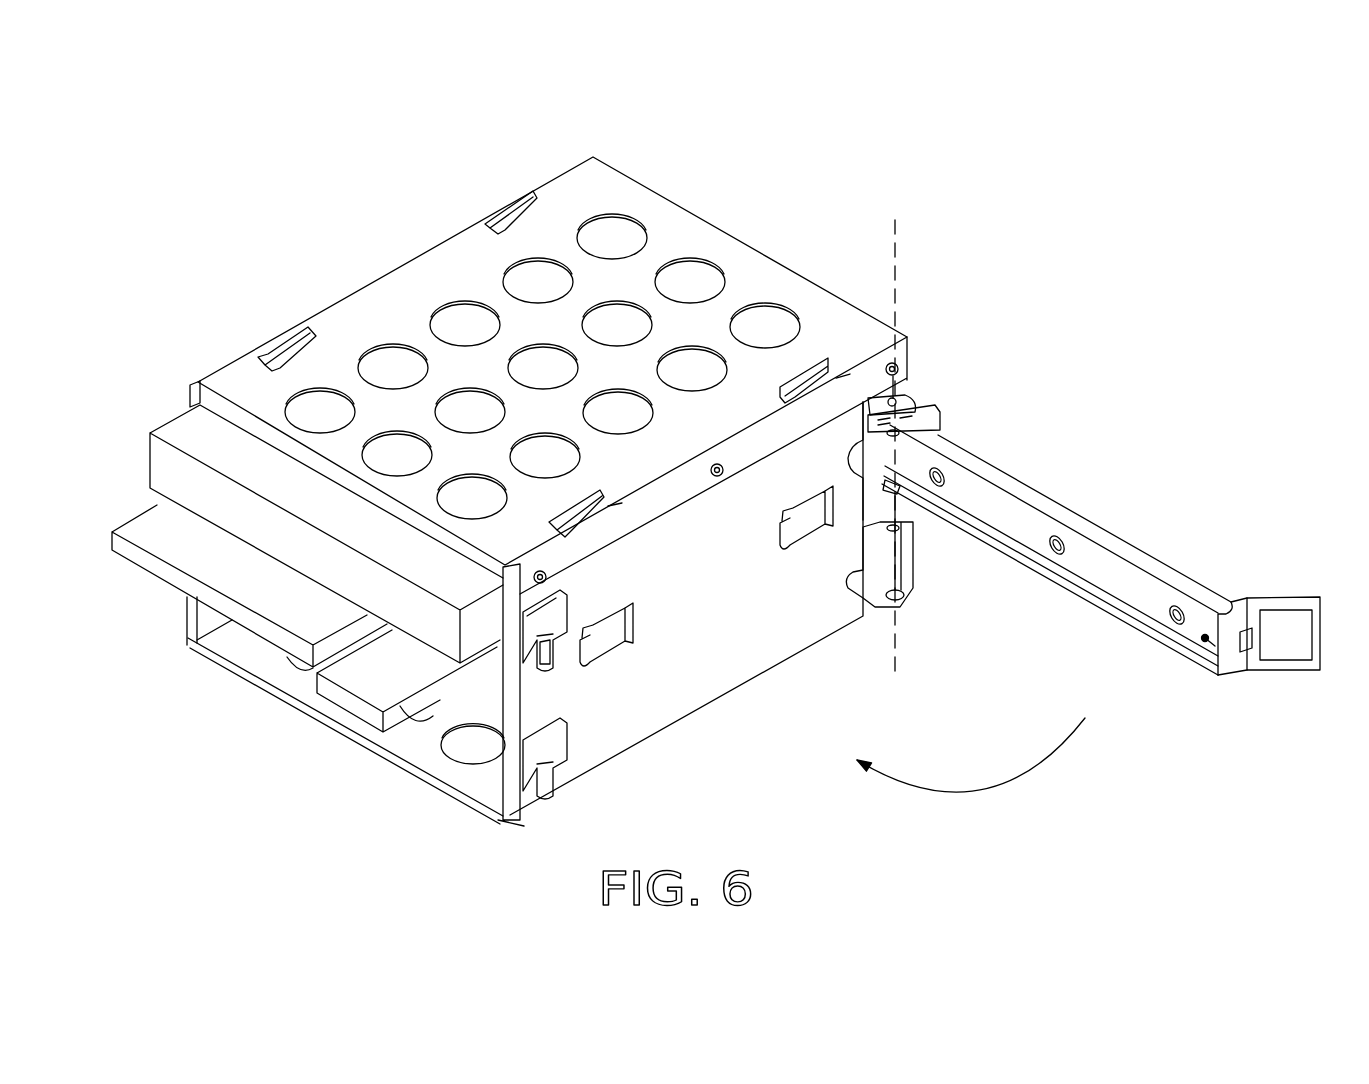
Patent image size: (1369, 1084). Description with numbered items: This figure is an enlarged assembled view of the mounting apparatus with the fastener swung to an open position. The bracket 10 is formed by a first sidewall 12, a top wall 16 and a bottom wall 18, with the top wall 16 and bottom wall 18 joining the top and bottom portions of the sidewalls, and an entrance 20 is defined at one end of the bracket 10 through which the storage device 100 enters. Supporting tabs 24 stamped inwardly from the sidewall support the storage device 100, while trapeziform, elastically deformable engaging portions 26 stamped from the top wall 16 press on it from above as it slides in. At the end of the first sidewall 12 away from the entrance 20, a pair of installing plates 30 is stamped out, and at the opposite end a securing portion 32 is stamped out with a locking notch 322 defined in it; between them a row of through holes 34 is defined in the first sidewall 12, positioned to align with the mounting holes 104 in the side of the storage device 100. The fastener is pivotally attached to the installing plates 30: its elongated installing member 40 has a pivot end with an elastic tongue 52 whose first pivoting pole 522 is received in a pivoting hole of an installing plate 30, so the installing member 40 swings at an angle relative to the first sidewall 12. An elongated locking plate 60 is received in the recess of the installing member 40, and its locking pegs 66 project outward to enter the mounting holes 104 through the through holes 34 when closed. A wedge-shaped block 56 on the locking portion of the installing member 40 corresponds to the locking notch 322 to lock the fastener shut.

The bracket 10 is at (583, 188).
The first sidewall 12 is at (717, 660).
The top wall 16 is at (752, 283).
The bottom wall 18 is at (460, 772).
The entrance 20 is at (417, 735).
The supporting tabs 24 is at (630, 658).
The engaging portions 26 is at (600, 525).
The installing plates 30 is at (917, 393).
The securing portion 32 is at (567, 745).
The locking notch 322 is at (535, 660).
The through holes 34 is at (557, 625).
The installing member 40 is at (1060, 498).
The elastic tongue 52 is at (900, 425).
The first pivoting pole 522 is at (912, 398).
The wedge-shaped block 56 is at (1247, 643).
The locking plate 60 is at (1085, 565).
The locking pegs 66 is at (1205, 640).
The storage device 100 is at (197, 484).
The mounting holes 104 is at (890, 430).